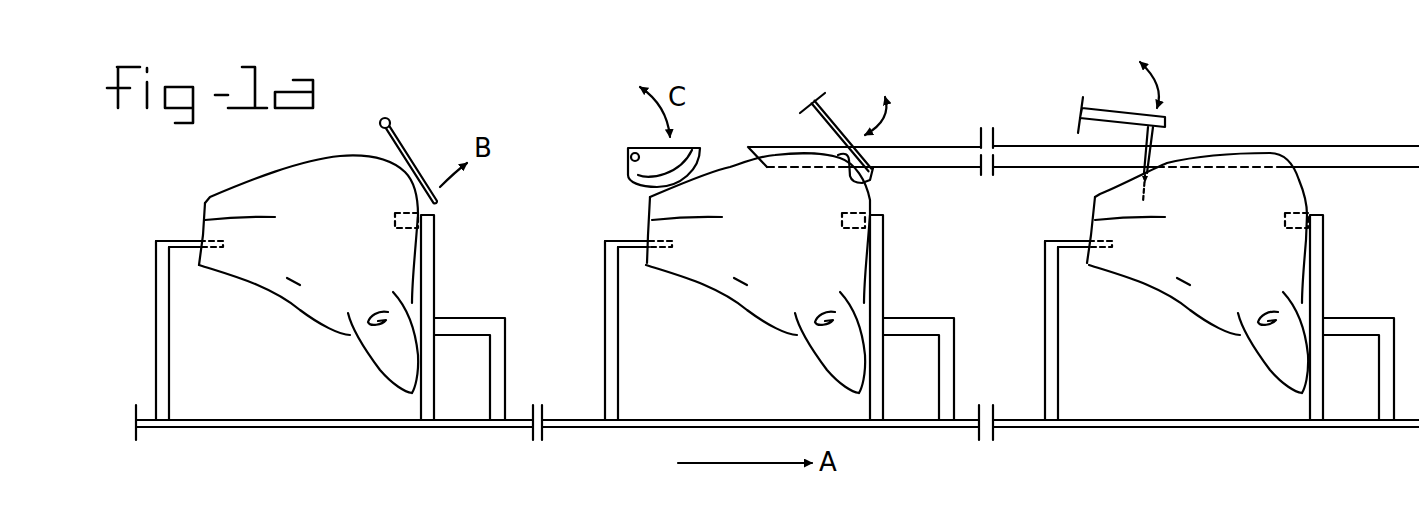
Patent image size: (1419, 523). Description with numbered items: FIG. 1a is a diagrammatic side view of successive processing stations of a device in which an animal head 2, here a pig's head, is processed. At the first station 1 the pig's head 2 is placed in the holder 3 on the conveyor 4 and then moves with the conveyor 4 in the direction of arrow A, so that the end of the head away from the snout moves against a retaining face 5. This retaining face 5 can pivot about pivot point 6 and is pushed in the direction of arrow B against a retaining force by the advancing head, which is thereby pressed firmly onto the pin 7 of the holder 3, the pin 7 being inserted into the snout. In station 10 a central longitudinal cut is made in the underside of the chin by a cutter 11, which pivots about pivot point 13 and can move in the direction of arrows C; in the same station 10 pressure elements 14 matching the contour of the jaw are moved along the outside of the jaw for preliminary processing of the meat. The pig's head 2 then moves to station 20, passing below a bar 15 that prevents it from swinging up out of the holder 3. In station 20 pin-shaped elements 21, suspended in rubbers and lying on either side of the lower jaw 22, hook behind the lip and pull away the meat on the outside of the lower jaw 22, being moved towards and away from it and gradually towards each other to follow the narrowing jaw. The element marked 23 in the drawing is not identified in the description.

The station 1 is at (300, 153).
The animal head 2 is at (306, 300).
The holder 3 is at (152, 325).
The conveyor 4 is at (400, 427).
The retaining face 5 is at (418, 165).
The pivot point 6 is at (390, 118).
The pin 7 is at (182, 240).
The station 10 is at (768, 131).
The cutter 11 is at (637, 175).
The pivot point 13 is at (632, 153).
The pressure elements 14 is at (870, 182).
The bar 15 is at (1388, 153).
The station 20 is at (1171, 130).
The pin-shaped elements 21 is at (1157, 138).
The lower jaw 22 is at (242, 193).
The flap 23 is at (389, 383).